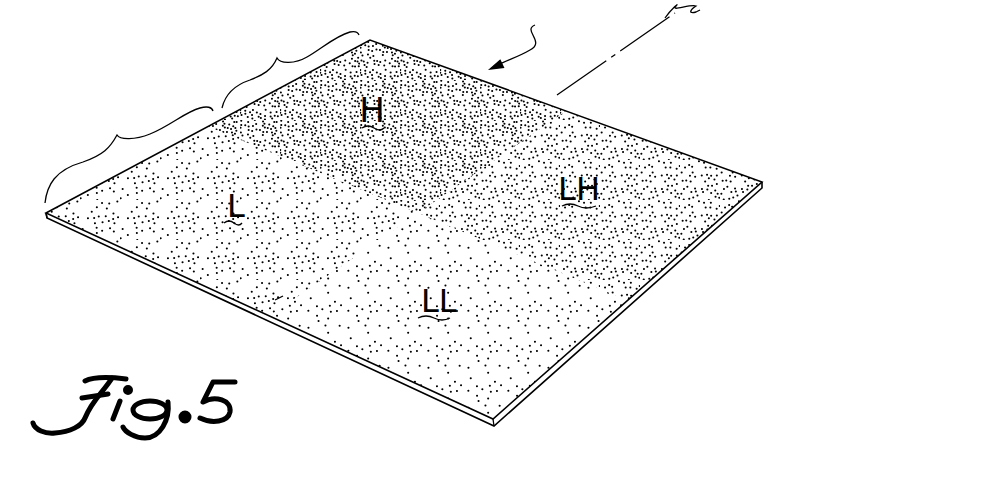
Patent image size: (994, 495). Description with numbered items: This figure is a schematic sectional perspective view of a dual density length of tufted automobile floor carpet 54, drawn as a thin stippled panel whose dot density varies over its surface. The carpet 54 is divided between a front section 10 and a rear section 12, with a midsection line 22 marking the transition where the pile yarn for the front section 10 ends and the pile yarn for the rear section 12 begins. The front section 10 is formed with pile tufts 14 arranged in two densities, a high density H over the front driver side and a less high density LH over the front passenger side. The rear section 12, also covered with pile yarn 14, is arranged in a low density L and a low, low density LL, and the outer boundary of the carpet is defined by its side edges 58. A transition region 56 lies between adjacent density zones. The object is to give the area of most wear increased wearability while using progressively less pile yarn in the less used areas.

The front section 10 is at (290, 68).
The rear section 12 is at (129, 155).
The pile tufts 14 is at (652, 157).
The midsection line 22 is at (622, 312).
The tufted automobile floor carpet 54 is at (533, 40).
The boundary region 56 is at (275, 297).
The side edges 58 is at (46, 216).